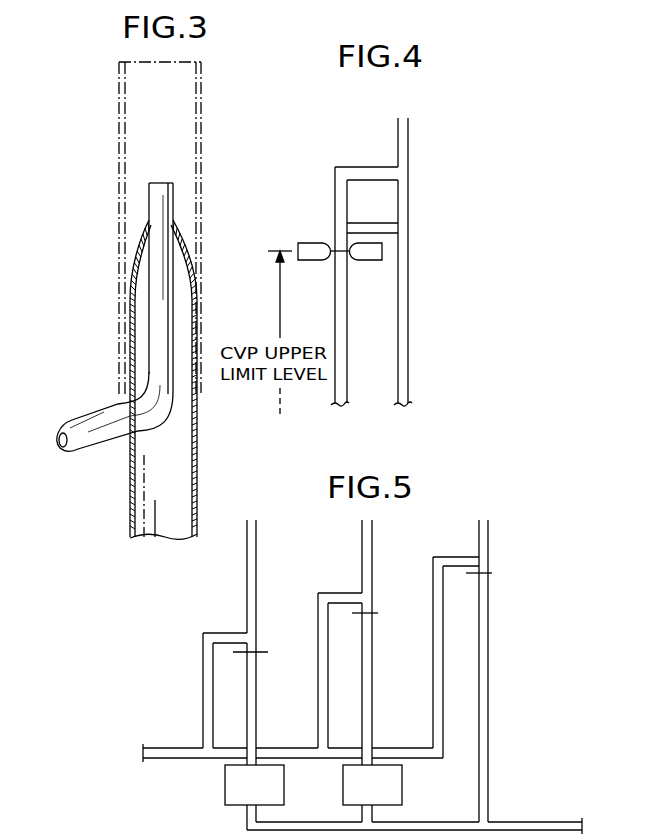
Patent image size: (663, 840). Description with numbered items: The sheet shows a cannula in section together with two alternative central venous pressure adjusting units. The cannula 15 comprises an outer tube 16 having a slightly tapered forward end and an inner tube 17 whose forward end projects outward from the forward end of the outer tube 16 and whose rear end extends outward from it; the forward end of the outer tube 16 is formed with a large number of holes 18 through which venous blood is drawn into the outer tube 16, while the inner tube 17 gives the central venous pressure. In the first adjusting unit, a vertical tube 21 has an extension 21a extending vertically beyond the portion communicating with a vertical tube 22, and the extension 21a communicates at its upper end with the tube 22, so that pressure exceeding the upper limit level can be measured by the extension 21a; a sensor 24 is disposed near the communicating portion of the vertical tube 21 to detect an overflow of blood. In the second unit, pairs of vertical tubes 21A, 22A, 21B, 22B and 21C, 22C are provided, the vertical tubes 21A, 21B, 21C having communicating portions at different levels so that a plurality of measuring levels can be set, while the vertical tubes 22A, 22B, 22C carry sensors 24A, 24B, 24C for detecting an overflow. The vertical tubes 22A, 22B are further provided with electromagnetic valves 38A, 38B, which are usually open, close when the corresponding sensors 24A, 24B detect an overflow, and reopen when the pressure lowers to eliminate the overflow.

In FIG. 3, the cannula 15 is at (209, 320).
In FIG. 3, the outer tube 16 is at (198, 441).
In FIG. 3, the inner tube 17 is at (155, 341).
In FIG. 3, the holes 18 is at (143, 228).
In FIG. 4, the vertical tube 21 is at (348, 356).
In FIG. 4, the extension 21a is at (333, 188).
In FIG. 4, the vertical tube 22 is at (409, 337).
In FIG. 4, the sensor 24 is at (311, 243).
In FIG. 5, the vertical tube 21A is at (203, 694).
In FIG. 5, the vertical tube 21B is at (318, 718).
In FIG. 5, the vertical tube 21C is at (433, 712).
In FIG. 5, the vertical tube 22A is at (257, 678).
In FIG. 5, the vertical tube 22B is at (373, 664).
In FIG. 5, the vertical tube 22C is at (489, 664).
In FIG. 5, the sensor 24A is at (262, 649).
In FIG. 5, the sensor 24B is at (373, 611).
In FIG. 5, the sensor 24C is at (493, 571).
In FIG. 5, the electromagnetic valve 38A is at (225, 788).
In FIG. 5, the electromagnetic valve 38B is at (403, 786).